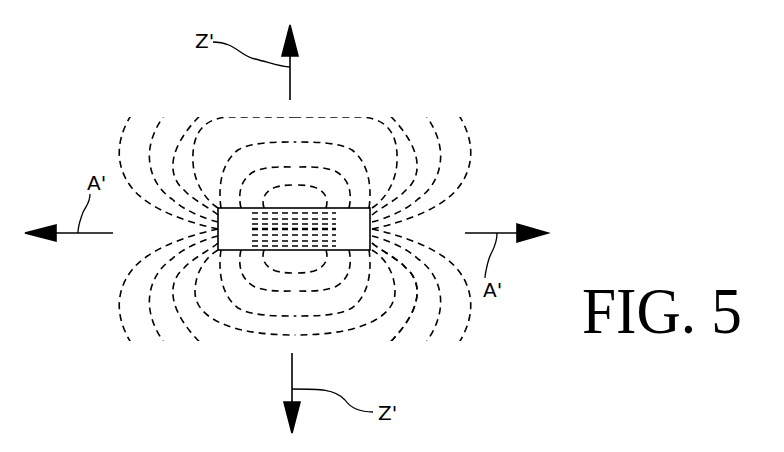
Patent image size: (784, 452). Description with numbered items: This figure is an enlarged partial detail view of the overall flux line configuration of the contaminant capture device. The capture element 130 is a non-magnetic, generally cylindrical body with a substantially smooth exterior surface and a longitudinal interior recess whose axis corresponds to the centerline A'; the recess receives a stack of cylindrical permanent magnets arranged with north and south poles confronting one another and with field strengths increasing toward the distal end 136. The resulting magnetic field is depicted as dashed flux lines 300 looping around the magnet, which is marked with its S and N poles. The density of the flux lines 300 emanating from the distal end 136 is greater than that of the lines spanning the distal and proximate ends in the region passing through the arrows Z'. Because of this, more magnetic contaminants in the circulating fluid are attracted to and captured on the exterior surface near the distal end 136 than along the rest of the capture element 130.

The capture element 130 is at (325, 205).
The flux lines 300 is at (432, 128).
The distal end 136 is at (393, 291).